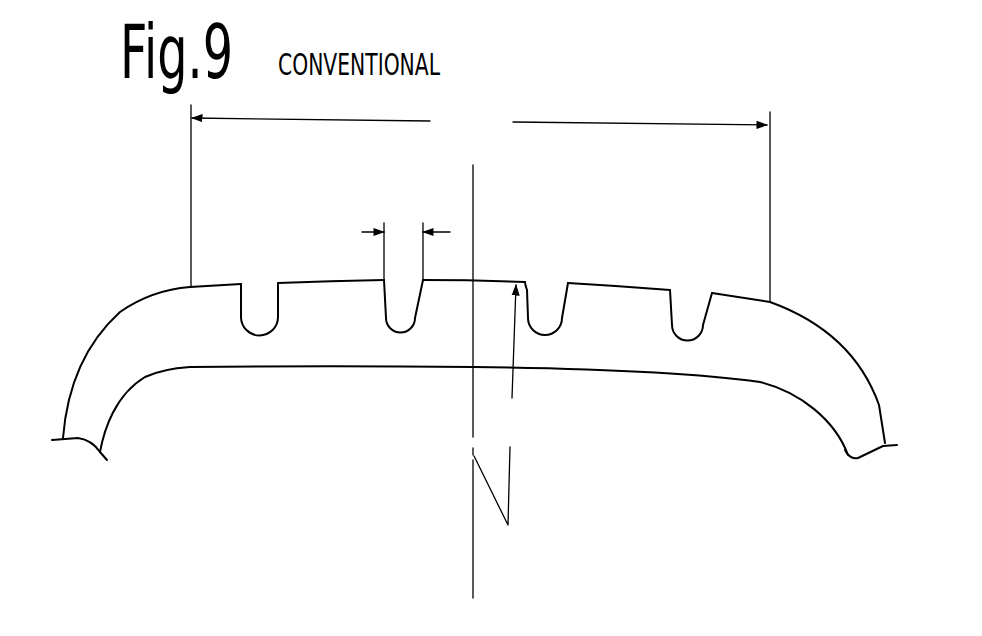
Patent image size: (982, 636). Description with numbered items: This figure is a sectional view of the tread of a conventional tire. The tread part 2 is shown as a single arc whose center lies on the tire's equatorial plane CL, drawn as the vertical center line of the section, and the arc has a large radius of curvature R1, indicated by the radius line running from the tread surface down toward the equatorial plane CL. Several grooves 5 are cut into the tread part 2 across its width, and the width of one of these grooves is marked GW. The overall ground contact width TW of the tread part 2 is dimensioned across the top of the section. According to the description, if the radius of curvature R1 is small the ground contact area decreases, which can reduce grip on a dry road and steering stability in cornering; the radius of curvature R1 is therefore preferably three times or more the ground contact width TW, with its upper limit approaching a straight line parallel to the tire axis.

The tread part 2 is at (343, 268).
The groove 5 is at (257, 288).
The ground contact width TW is at (480, 203).
The groove width GW is at (406, 235).
The radius of curvature R1 is at (498, 405).
The tire's equatorial plane CL is at (473, 525).